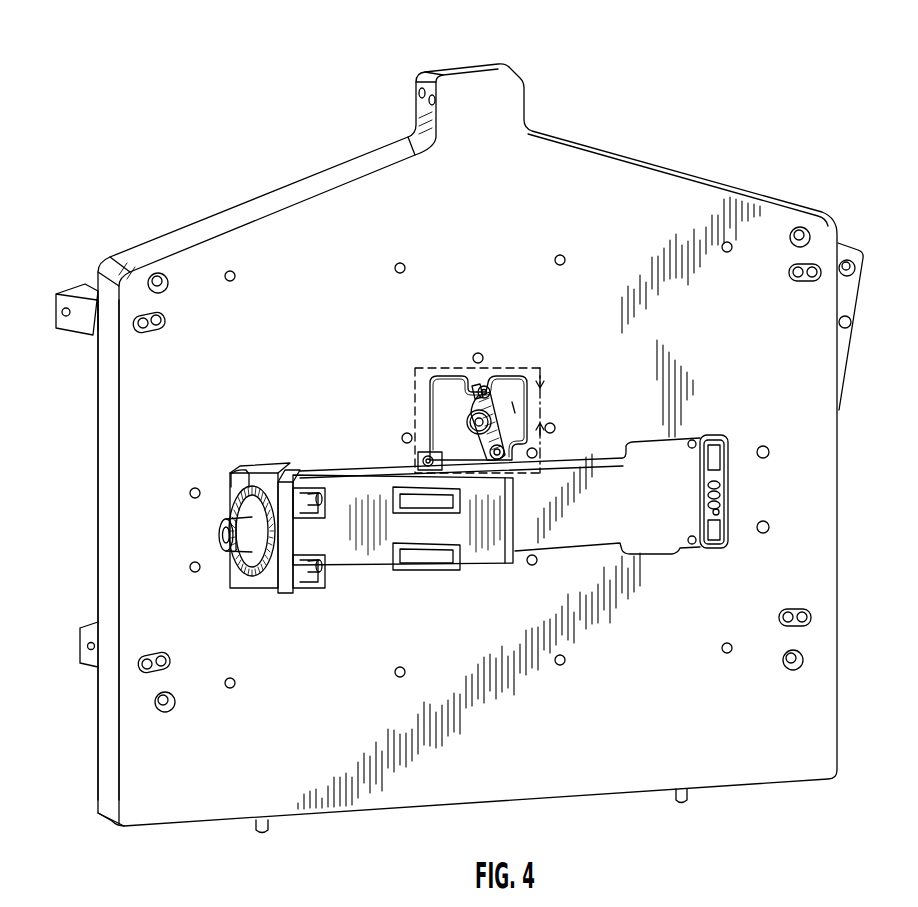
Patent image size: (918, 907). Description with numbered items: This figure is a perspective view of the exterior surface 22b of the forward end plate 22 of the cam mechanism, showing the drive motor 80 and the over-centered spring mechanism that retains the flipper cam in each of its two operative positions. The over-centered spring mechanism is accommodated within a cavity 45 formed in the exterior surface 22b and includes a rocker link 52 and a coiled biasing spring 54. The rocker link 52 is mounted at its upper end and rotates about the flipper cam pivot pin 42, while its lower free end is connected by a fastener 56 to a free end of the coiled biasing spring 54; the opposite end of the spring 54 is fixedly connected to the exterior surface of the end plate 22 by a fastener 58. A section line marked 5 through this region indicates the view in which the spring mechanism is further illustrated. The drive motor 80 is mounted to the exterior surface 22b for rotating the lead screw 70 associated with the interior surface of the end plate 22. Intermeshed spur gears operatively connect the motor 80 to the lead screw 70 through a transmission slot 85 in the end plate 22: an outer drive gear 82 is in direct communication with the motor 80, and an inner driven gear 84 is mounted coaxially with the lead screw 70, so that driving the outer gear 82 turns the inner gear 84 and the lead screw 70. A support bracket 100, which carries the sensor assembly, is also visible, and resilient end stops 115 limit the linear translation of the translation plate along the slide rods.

The forward end plate 22 is at (518, 70).
The exterior surface 22b is at (145, 381).
The resilient end stops 115 is at (80, 293).
The support bracket 100 is at (846, 294).
The section line 5 is at (540, 420).
The coiled biasing spring 54 is at (510, 420).
The fastener 56 is at (500, 455).
The flipper cam pivot pin 42 is at (478, 420).
The rocker link 52 is at (490, 446).
The fastener 58 is at (478, 386).
The cavity 45 is at (512, 420).
The lead screw 70 is at (731, 452).
The drive motor 80 is at (340, 548).
The inner driven gear 84 is at (240, 492).
The transmission slot 85 is at (246, 482).
The outer drive gear 82 is at (250, 568).